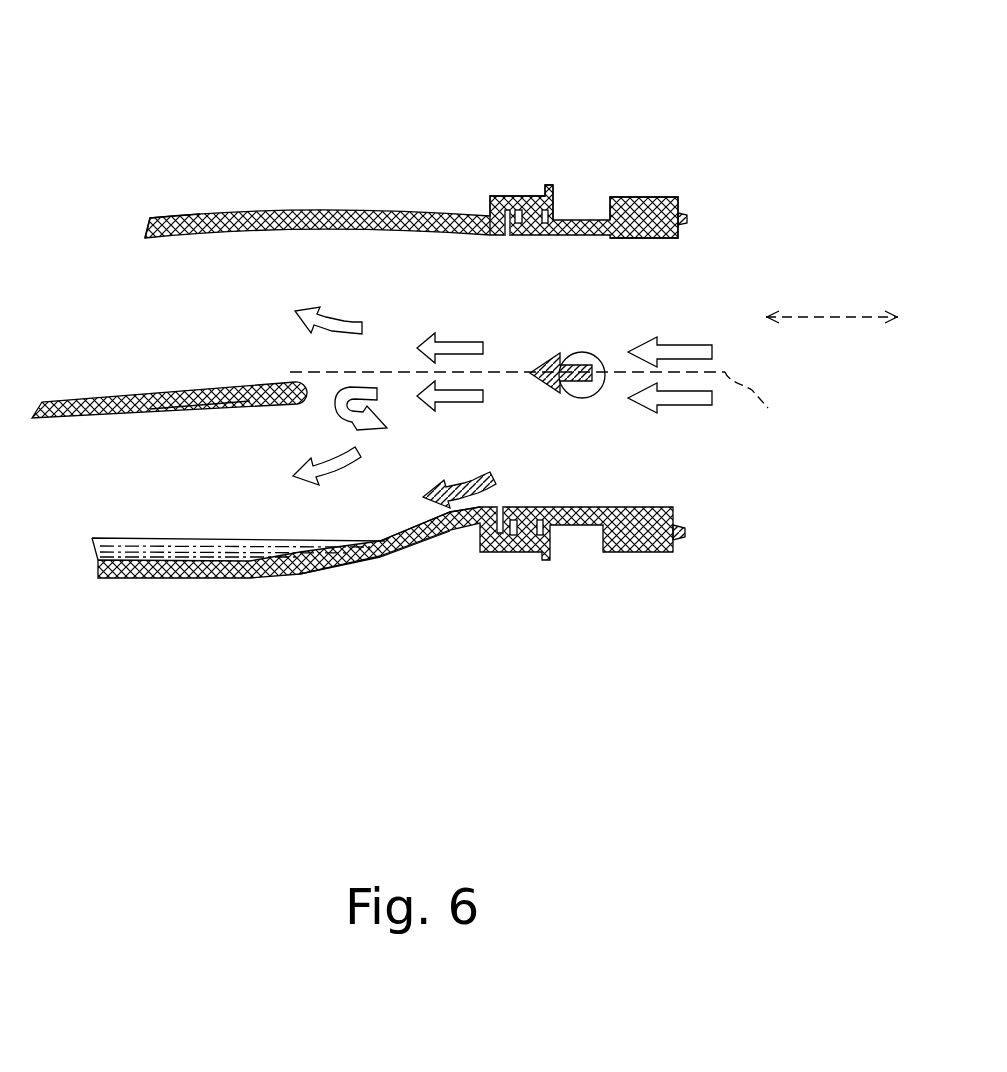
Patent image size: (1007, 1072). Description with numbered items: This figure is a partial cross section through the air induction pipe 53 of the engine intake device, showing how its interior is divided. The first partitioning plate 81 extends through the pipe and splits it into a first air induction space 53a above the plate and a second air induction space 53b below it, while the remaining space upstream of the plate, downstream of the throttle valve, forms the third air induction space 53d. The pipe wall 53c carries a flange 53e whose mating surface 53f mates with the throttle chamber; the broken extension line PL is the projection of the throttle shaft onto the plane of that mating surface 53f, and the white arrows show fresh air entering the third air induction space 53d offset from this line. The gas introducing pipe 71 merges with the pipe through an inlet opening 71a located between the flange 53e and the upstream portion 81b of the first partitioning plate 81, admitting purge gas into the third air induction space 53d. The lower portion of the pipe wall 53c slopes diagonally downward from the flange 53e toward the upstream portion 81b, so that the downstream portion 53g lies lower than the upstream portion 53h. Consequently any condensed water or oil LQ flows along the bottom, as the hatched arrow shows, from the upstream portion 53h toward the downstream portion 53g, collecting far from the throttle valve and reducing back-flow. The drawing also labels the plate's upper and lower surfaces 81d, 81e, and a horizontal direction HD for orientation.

The air induction pipe 53 is at (166, 110).
The first air induction space 53a is at (150, 347).
The second air induction space 53b is at (153, 504).
The pipe wall 53c is at (165, 222).
The third air induction space 53d is at (465, 316).
The flange 53e is at (650, 197).
The mating surface 53f is at (689, 208).
The downstream portion 53g is at (148, 584).
The upstream portion 53h is at (447, 535).
The gas introducing pipe 71 is at (658, 458).
The inlet opening 71a is at (585, 398).
The first partitioning plate 81 is at (92, 420).
The upstream portion of the first partitioning plate 81b is at (298, 423).
The upper surface of partition plate 81d is at (216, 388).
The lower surface of partition plate 81e is at (215, 410).
The horizontal direction HD is at (836, 314).
The extension line PL is at (539, 405).
The condensed water/oil LQ is at (250, 548).